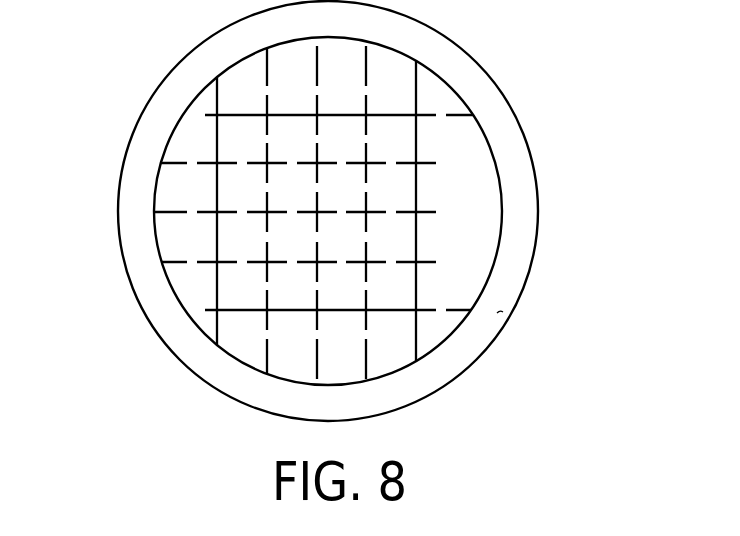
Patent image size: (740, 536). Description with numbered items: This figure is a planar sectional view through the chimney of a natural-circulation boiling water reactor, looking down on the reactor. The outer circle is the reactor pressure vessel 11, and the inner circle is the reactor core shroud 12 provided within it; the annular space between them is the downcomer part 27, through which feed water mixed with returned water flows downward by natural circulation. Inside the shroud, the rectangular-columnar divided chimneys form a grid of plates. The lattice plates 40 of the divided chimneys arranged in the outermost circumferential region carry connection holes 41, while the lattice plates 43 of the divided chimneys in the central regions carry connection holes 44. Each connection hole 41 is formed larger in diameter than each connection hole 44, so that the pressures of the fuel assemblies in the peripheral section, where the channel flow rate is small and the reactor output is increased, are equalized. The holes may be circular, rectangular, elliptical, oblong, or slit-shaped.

The reactor pressure vessel 11 is at (532, 273).
The reactor core shroud 12 is at (505, 233).
The downcomer part 27 is at (497, 313).
The lattice plate 40 is at (180, 212).
The connection hole 41 is at (435, 164).
The lattice plate 43 is at (318, 275).
The connection hole 44 is at (365, 188).